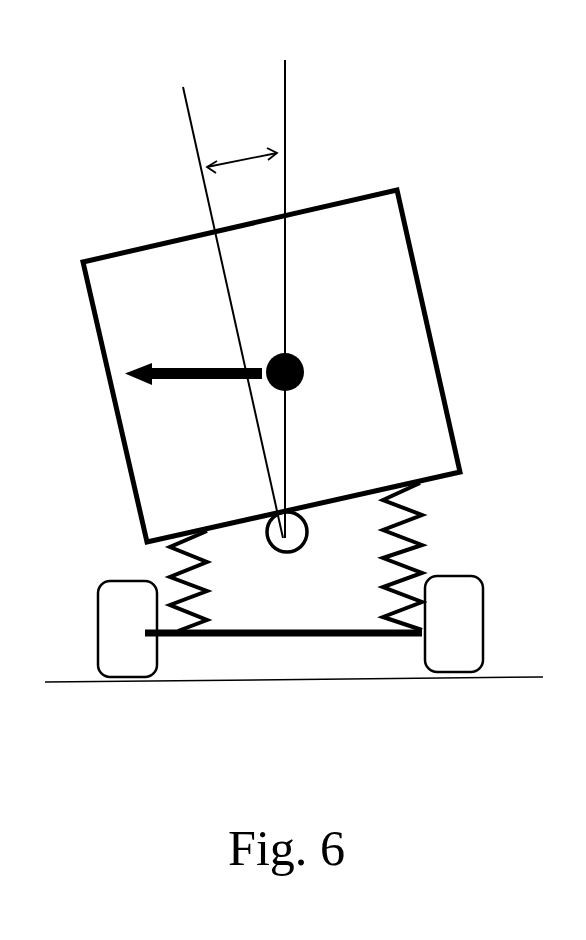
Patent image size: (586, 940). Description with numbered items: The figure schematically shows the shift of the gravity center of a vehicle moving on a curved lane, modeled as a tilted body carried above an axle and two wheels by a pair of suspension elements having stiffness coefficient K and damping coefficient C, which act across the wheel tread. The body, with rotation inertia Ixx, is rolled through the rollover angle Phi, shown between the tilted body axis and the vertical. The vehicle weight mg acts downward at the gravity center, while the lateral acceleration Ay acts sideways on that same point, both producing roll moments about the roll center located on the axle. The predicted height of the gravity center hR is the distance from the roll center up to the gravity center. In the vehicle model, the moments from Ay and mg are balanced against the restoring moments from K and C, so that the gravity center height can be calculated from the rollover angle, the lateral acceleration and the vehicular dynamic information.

The rollover angle Phi is at (242, 138).
The vehicle weight mg is at (309, 377).
The rotation inertia Ixx is at (350, 323).
The lateral acceleration Ay is at (187, 393).
The predicted height of the gravity center hR is at (287, 492).
The stiffness coefficient K is at (227, 584).
The damping coefficient C is at (359, 560).